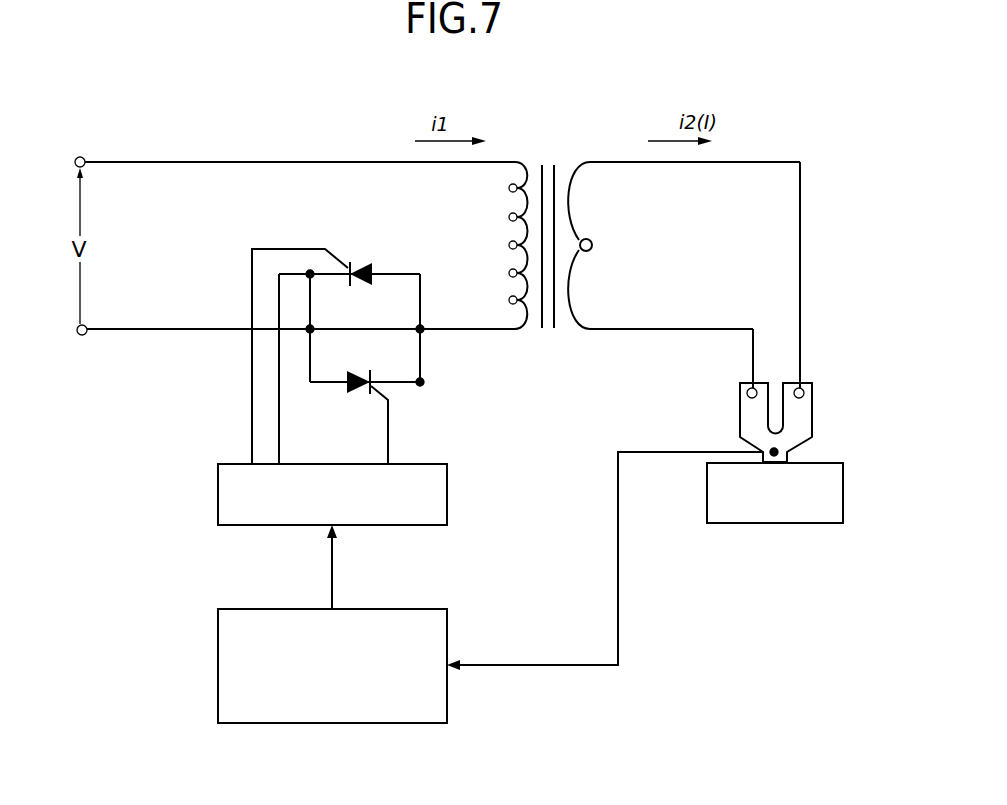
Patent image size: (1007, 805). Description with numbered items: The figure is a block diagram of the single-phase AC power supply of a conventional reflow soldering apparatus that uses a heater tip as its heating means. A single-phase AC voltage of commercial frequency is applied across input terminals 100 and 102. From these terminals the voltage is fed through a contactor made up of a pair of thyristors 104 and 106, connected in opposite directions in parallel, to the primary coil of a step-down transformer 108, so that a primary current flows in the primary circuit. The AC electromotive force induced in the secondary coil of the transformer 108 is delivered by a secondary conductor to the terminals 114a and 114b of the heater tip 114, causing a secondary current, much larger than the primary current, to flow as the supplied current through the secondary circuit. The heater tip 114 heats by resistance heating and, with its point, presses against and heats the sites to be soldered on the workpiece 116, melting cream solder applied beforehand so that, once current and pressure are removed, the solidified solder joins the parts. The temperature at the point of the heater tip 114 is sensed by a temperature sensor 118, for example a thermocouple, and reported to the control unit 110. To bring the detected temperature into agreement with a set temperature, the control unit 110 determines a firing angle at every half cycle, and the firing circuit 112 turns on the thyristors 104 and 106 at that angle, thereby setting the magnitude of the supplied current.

The input terminal 100 is at (80, 157).
The input terminal 102 is at (81, 336).
The thyristor 104 is at (366, 257).
The thyristor 106 is at (358, 398).
The step-down transformer 108 is at (550, 150).
The control unit 110 is at (218, 645).
The firing circuit 112 is at (435, 464).
The heater tip 114 is at (732, 410).
The terminal of heater tip 114a is at (805, 393).
The terminal of heater tip 114b is at (746, 391).
The workpiece 116 is at (806, 525).
The temperature sensor 118 is at (790, 450).